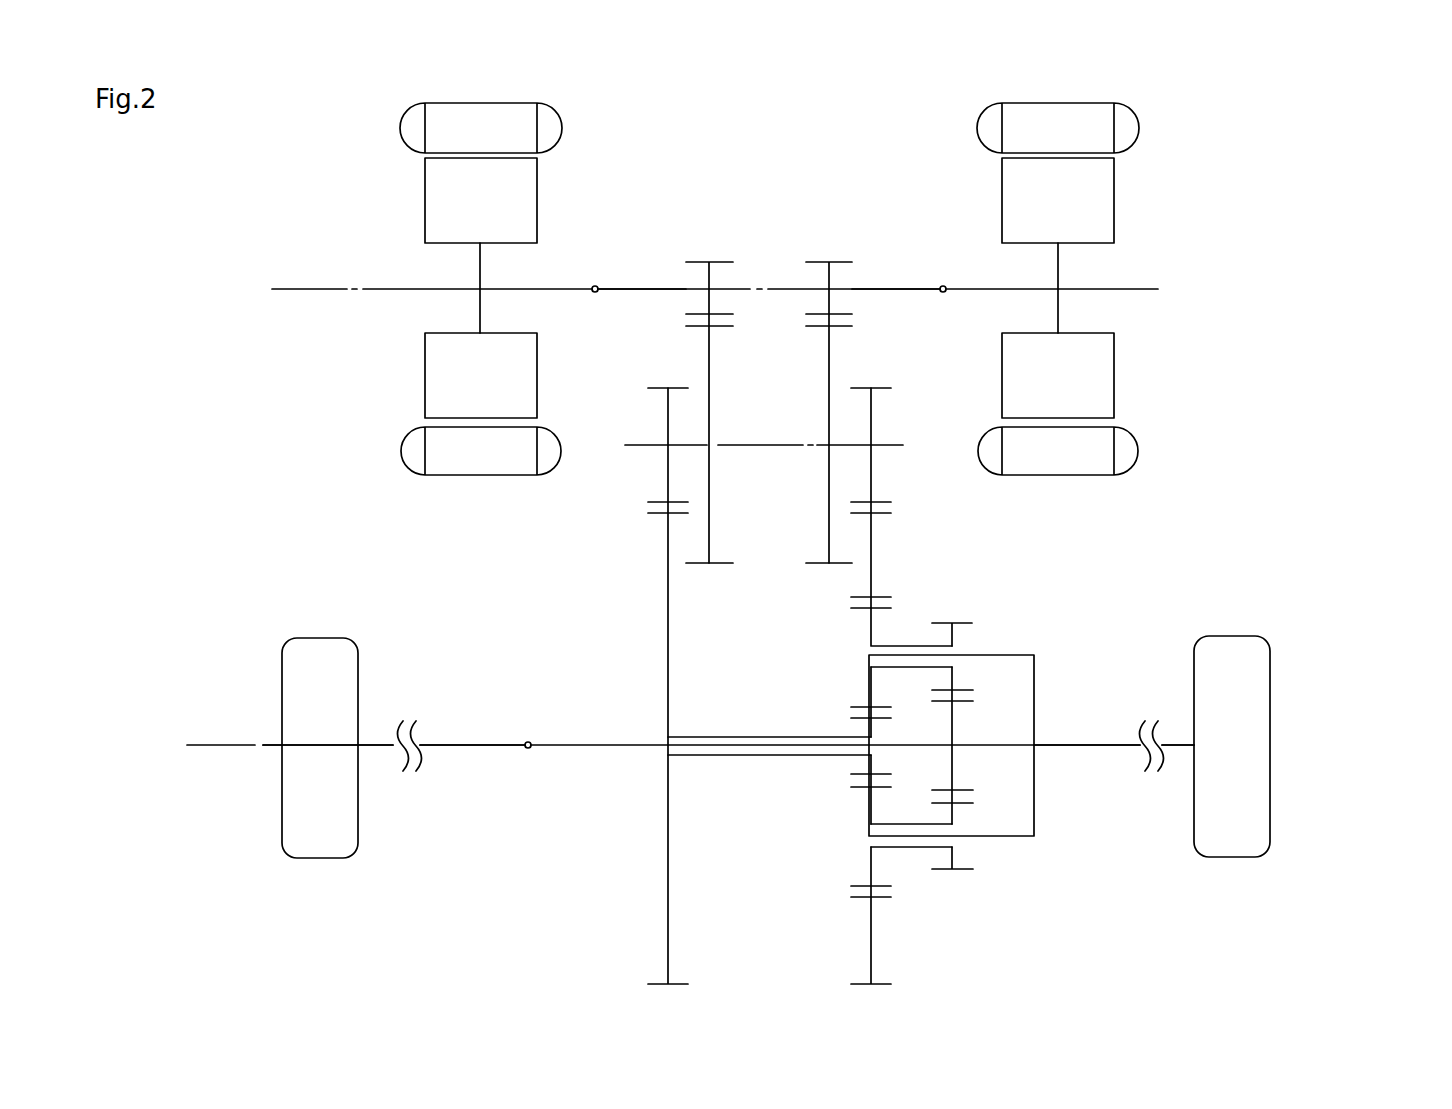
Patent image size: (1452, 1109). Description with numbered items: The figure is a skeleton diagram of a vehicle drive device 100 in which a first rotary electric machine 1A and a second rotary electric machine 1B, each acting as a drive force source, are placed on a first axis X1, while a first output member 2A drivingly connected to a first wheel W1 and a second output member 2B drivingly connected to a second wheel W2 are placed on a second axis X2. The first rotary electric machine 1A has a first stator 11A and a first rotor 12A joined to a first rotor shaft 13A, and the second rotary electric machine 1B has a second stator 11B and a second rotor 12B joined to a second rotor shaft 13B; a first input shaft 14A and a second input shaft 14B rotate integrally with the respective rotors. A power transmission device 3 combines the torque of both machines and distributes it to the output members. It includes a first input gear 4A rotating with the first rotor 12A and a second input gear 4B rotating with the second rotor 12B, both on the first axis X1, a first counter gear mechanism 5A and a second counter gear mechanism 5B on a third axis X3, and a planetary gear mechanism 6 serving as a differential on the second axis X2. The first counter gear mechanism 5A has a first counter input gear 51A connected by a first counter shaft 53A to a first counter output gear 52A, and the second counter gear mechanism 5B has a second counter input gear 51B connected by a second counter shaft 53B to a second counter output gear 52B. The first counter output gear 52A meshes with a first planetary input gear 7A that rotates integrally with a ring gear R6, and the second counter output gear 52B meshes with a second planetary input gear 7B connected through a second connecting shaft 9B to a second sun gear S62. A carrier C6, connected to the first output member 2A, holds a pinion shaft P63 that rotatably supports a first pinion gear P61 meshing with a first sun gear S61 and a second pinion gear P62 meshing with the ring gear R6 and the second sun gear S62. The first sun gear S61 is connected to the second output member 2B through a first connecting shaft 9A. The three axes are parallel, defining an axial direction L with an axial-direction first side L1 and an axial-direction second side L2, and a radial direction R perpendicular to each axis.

The vehicle drive device 100 is at (1330, 248).
The first rotary electric machine 1A is at (944, 130).
The second rotary electric machine 1B is at (594, 128).
The first stator 11A is at (1093, 108).
The second stator 11B is at (447, 110).
The first rotor 12A is at (1108, 208).
The second rotor 12B is at (432, 185).
The first rotor shaft 13A is at (1132, 288).
The second rotor shaft 13B is at (418, 288).
The first input shaft 14A is at (908, 289).
The second input shaft 14B is at (652, 289).
The power transmission device 3 is at (837, 582).
The first input gear 4A is at (840, 262).
The second input gear 4B is at (722, 262).
The first counter gear mechanism 5A is at (927, 402).
The second counter gear mechanism 5B is at (627, 392).
The first counter input gear 51A is at (823, 327).
The second counter input gear 51B is at (720, 327).
The first counter output gear 52A is at (877, 388).
The second counter output gear 52B is at (662, 388).
The first counter shaft 53A is at (852, 447).
The second counter shaft 53B is at (690, 447).
The first planetary input gear 7A is at (882, 510).
The second planetary input gear 7B is at (660, 515).
The planetary gear mechanism 6 is at (1001, 610).
The ring gear R6 is at (883, 596).
The first sun gear S61 is at (957, 702).
The second sun gear S62 is at (858, 718).
The first pinion gear P61 is at (963, 620).
The second pinion gear P62 is at (861, 612).
The pinion shaft P63 is at (987, 655).
The carrier C6 is at (1036, 670).
The first connecting shaft 9A is at (638, 745).
The second connecting shaft 9B is at (759, 759).
The first output member 2A is at (1088, 745).
The second output member 2B is at (472, 745).
The first wheel W1 is at (1235, 642).
The second wheel W2 is at (318, 652).
The first axis X1 is at (697, 289).
The second axis X2 is at (673, 746).
The third axis X3 is at (746, 446).
The axial direction L is at (270, 203).
The axial-direction first side L1 is at (301, 199).
The axial-direction second side L2 is at (98, 199).
The radial direction R is at (160, 442).